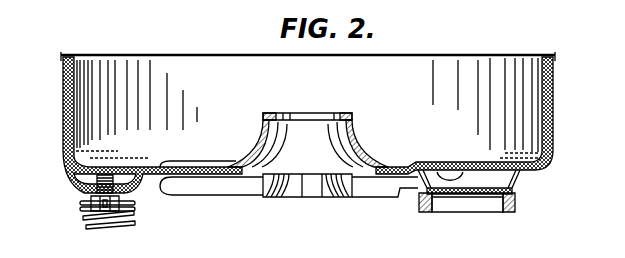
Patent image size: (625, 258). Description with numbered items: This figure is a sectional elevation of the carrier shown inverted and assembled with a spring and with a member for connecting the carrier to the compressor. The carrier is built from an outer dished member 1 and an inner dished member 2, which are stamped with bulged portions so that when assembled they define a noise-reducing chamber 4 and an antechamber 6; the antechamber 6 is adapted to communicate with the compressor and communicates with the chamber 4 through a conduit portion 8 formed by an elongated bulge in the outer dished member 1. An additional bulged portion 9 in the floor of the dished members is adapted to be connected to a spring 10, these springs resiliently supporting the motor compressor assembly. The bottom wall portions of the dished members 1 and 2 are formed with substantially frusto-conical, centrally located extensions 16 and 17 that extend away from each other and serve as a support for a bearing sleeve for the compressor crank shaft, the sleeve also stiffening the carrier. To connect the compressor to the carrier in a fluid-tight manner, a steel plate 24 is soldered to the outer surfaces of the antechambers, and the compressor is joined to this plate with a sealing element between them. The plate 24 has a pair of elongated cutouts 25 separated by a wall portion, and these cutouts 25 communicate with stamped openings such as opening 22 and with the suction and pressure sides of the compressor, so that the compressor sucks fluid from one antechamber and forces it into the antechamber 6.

The outer dished member 1 is at (549, 103).
The inner dished member 2 is at (546, 108).
The noise-reducing chamber 4 is at (191, 164).
The antechamber 6 is at (500, 171).
The conduit portion 8 is at (444, 177).
The bulged portion 9 is at (78, 178).
The spring 10 is at (98, 226).
The frusto-conical extension 16 is at (263, 188).
The frusto-conical extension 17 is at (254, 151).
The opening 22 is at (444, 200).
The steel plate 24 is at (515, 206).
The elongated cutout 25 is at (486, 206).